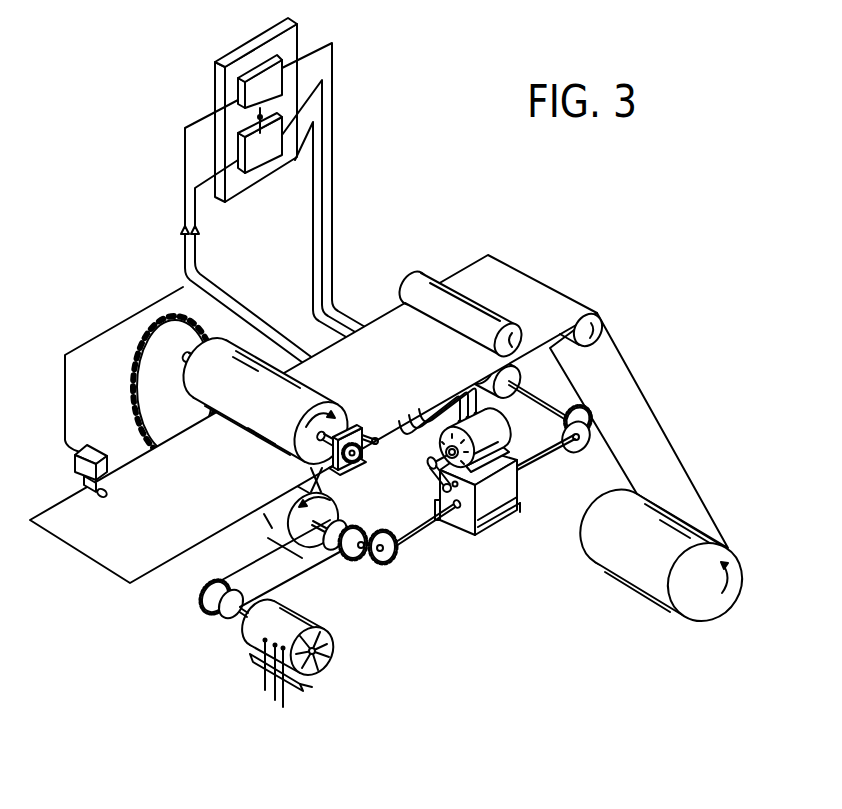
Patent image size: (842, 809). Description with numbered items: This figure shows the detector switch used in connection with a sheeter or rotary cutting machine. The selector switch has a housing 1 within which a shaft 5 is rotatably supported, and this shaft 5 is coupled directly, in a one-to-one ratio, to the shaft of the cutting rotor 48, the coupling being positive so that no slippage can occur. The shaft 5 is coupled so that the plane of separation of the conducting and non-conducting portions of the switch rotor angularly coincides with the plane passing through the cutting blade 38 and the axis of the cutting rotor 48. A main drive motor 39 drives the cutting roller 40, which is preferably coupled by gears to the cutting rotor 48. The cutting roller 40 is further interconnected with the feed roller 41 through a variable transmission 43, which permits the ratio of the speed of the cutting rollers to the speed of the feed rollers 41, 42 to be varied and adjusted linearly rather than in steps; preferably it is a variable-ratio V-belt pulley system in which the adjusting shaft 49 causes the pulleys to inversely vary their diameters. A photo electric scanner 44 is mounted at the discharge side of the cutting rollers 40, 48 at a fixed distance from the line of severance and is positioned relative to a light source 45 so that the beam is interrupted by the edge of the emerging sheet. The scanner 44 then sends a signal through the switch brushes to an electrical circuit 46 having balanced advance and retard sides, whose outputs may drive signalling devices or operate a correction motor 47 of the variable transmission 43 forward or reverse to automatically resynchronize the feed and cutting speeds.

The housing 1 is at (364, 440).
The shaft 5 is at (343, 433).
The cutting blade 38 is at (337, 487).
The main drive motor 39 is at (323, 627).
The cutting roller 40 is at (267, 528).
The feed roller 41 is at (516, 375).
The feed roller 42 is at (513, 331).
The variable transmission 43 is at (510, 492).
The photo electric scanner 44 is at (75, 461).
The light source 45 is at (82, 488).
The electrical circuit 46 is at (204, 96).
The correction motor 47 is at (500, 432).
The cutting rotor 48 is at (300, 396).
The adjusting shaft 49 is at (475, 533).